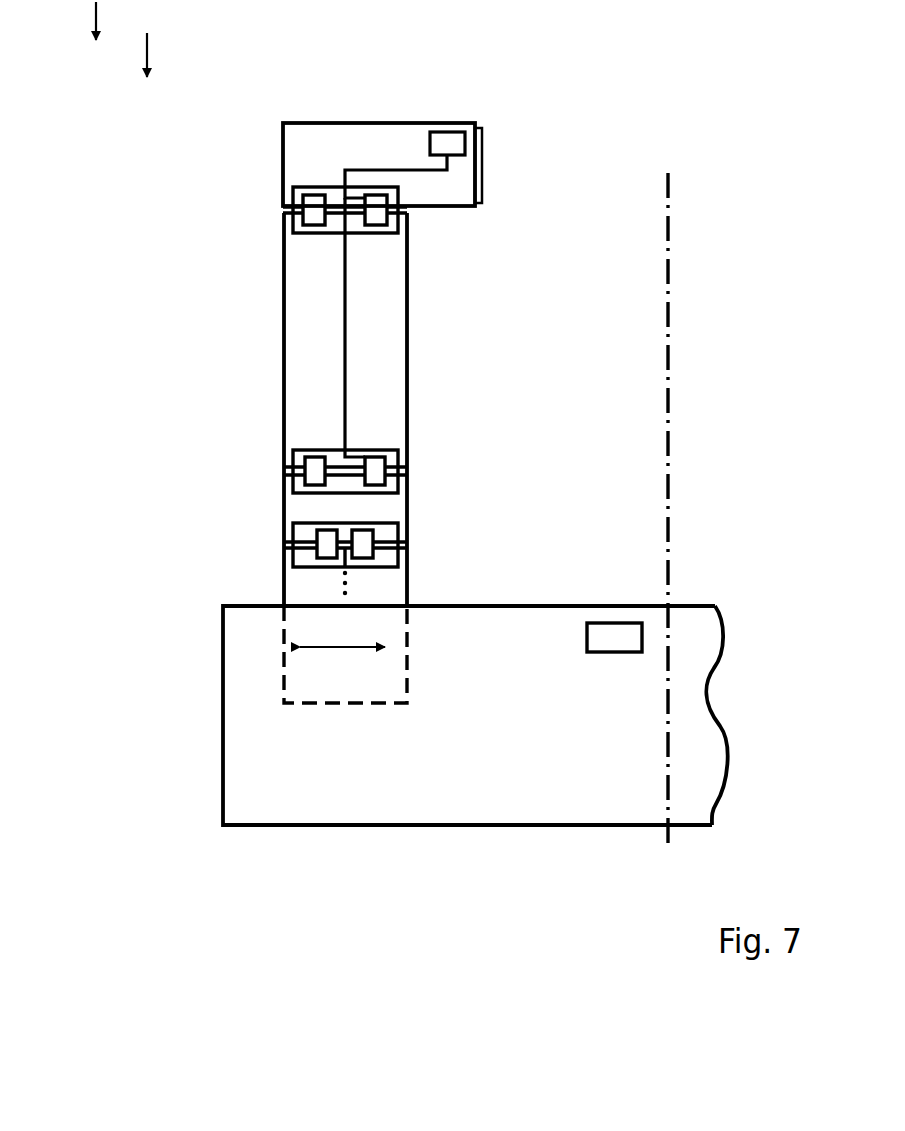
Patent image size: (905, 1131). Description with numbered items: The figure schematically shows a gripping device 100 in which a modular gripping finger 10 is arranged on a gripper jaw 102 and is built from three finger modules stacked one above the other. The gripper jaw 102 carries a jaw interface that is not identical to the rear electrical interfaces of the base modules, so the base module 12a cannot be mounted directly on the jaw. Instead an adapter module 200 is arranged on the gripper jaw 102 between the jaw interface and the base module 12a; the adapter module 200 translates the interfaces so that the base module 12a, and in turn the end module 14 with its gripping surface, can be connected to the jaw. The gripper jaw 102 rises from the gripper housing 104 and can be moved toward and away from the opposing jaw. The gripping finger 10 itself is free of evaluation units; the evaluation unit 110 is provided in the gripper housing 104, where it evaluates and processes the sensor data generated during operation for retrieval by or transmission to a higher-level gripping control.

The gripping device 100 is at (69, 20).
The modular gripping finger 10 is at (127, 55).
The end module 14 is at (380, 142).
The base module 12a is at (303, 392).
The adapter module 200 is at (303, 508).
The gripper jaw 102 is at (297, 590).
The gripper housing 104 is at (247, 677).
The evaluation unit 110 is at (615, 637).